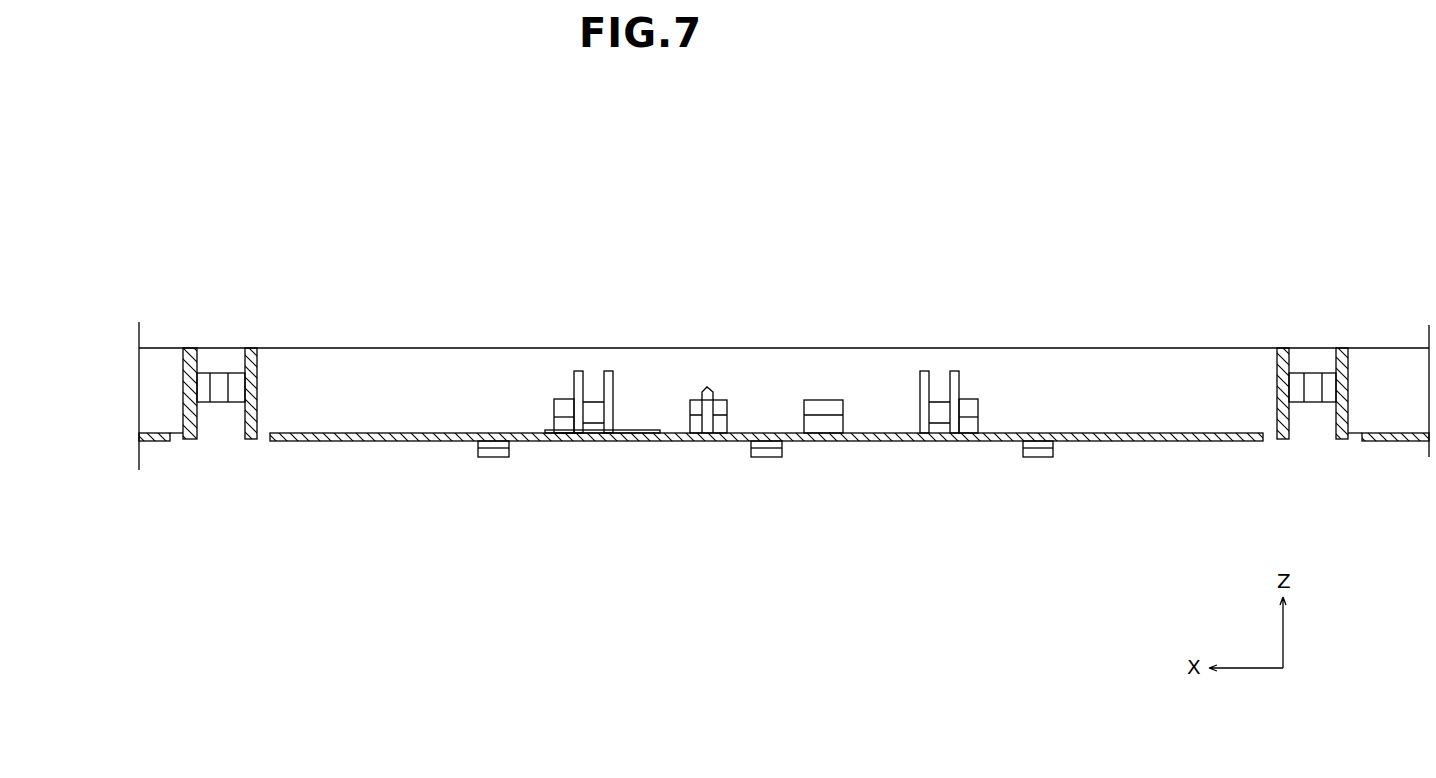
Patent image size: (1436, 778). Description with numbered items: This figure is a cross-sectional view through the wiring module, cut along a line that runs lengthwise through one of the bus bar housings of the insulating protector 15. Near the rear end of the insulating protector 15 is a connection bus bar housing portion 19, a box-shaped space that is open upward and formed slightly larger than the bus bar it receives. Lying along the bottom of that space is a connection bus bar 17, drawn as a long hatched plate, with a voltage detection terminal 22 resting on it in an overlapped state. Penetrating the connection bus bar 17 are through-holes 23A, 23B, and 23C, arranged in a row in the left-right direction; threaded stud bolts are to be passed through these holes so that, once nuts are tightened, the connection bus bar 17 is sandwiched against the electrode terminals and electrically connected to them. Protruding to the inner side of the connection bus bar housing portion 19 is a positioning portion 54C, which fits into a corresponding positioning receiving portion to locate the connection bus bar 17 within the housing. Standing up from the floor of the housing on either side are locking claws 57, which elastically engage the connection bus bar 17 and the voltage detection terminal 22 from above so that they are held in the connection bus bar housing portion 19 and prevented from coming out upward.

The insulating protector 15 is at (1283, 360).
The connection bus bar 17 is at (293, 433).
The connection bus bar housing portion 19 is at (257, 374).
The voltage detection terminal 22 is at (547, 433).
The through-hole 23A is at (393, 436).
The through-hole 23B is at (937, 437).
The through-hole 23C is at (663, 435).
The positioning portion 54C is at (707, 400).
The locking claw 57 is at (596, 404).